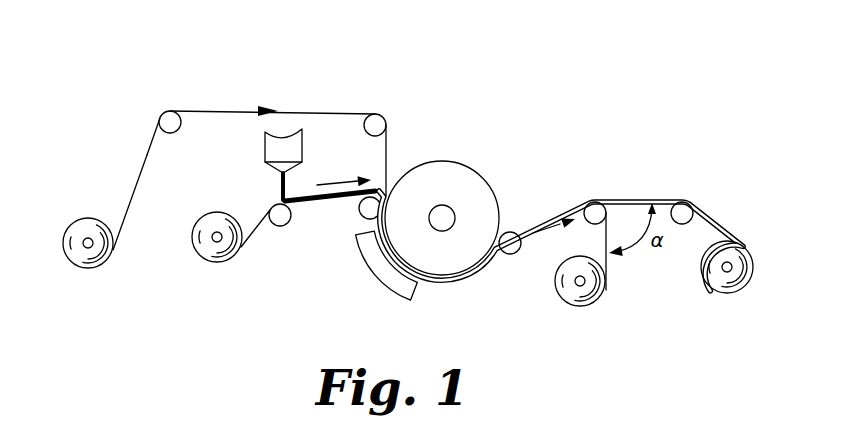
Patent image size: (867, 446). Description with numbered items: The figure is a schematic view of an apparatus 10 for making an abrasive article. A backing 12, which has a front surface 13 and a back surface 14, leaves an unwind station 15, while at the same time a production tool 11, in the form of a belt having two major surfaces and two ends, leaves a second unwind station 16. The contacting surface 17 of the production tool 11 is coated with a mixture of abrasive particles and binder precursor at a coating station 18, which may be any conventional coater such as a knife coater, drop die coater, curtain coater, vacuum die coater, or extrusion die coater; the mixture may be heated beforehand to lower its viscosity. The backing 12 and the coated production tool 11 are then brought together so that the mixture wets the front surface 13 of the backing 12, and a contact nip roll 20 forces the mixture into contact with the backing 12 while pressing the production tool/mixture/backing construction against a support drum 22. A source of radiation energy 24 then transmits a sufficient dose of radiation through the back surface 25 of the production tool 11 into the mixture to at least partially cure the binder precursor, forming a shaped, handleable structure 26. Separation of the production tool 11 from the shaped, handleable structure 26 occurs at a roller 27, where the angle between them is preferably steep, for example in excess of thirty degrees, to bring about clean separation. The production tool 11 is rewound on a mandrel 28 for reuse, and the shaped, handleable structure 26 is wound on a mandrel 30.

The apparatus 10 is at (322, 74).
The production tool 11 is at (255, 254).
The backing 12 is at (131, 184).
The front surface 13 is at (147, 162).
The back surface 14 is at (148, 143).
The unwind station 15 is at (67, 248).
The unwind station 16 is at (200, 243).
The contacting surface 17 is at (255, 223).
The coating station 18 is at (272, 152).
The contact nip roll 20 is at (360, 207).
The support drum 22 is at (448, 170).
The source of radiation energy 24 is at (386, 278).
The back surface 25 is at (262, 228).
The shaped, handleable structure 26 is at (622, 198).
The roller 27 is at (593, 200).
The mandrel 28 is at (563, 285).
The mandrel 30 is at (708, 277).